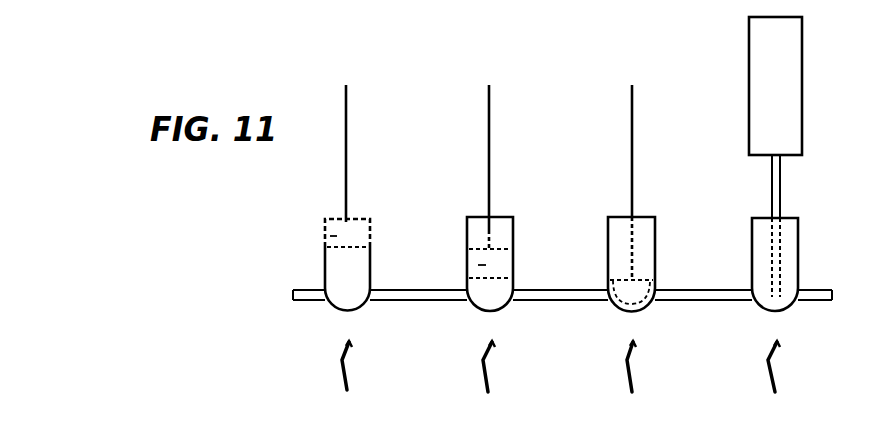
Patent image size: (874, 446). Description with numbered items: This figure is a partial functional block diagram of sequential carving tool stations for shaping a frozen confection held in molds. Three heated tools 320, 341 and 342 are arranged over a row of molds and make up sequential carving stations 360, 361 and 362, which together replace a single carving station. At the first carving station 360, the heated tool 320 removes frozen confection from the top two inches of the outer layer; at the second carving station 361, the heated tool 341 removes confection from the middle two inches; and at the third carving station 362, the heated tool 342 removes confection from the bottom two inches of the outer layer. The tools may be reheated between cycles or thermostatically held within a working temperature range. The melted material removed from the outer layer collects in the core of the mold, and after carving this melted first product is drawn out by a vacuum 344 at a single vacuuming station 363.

The heated tool 320 is at (318, 233).
The heated tool 341 is at (464, 266).
The heated tool 342 is at (614, 277).
The vacuum 344 is at (775, 203).
The carving station 360 is at (347, 383).
The carving station 361 is at (489, 383).
The carving station 362 is at (632, 383).
The vacuuming station 363 is at (775, 383).